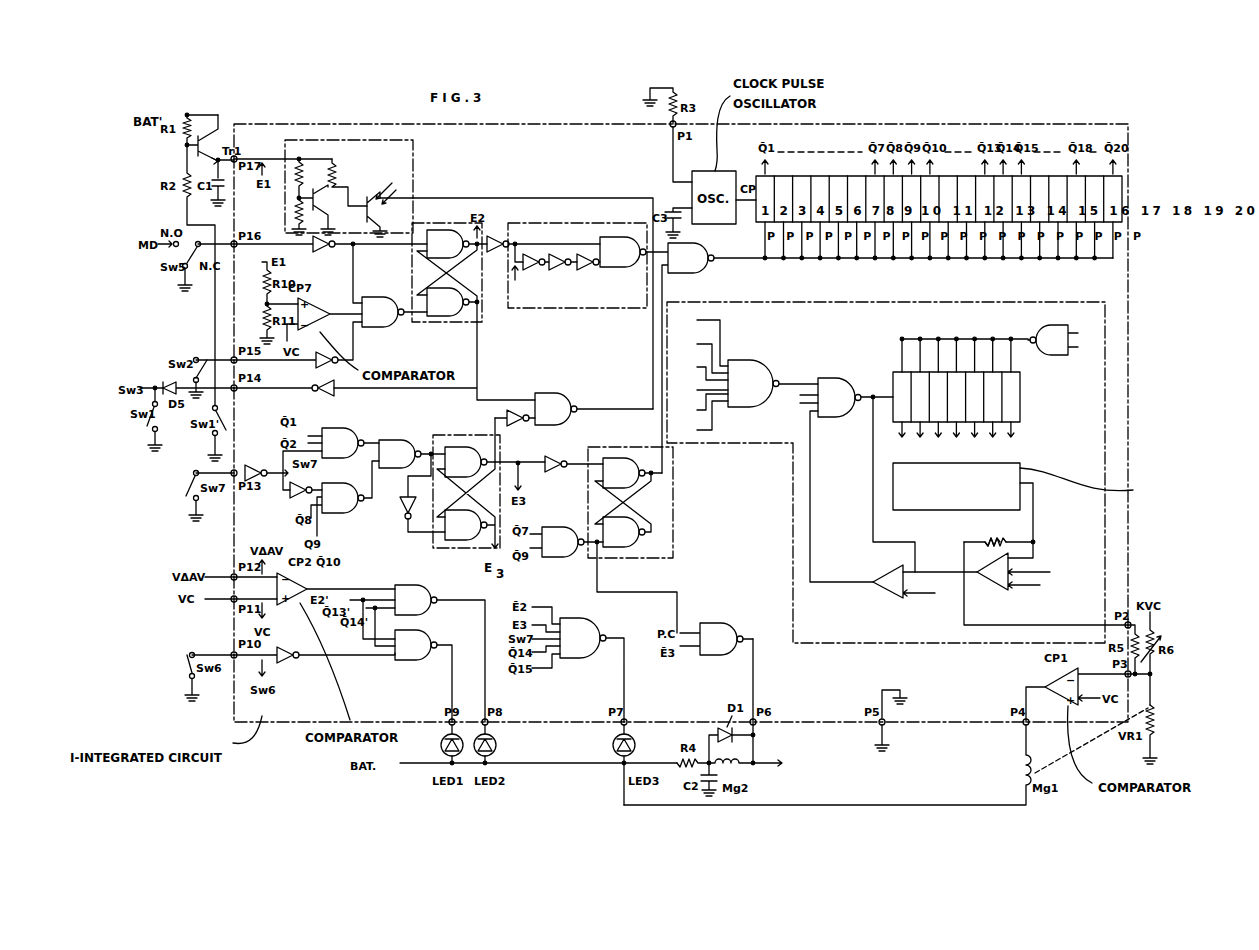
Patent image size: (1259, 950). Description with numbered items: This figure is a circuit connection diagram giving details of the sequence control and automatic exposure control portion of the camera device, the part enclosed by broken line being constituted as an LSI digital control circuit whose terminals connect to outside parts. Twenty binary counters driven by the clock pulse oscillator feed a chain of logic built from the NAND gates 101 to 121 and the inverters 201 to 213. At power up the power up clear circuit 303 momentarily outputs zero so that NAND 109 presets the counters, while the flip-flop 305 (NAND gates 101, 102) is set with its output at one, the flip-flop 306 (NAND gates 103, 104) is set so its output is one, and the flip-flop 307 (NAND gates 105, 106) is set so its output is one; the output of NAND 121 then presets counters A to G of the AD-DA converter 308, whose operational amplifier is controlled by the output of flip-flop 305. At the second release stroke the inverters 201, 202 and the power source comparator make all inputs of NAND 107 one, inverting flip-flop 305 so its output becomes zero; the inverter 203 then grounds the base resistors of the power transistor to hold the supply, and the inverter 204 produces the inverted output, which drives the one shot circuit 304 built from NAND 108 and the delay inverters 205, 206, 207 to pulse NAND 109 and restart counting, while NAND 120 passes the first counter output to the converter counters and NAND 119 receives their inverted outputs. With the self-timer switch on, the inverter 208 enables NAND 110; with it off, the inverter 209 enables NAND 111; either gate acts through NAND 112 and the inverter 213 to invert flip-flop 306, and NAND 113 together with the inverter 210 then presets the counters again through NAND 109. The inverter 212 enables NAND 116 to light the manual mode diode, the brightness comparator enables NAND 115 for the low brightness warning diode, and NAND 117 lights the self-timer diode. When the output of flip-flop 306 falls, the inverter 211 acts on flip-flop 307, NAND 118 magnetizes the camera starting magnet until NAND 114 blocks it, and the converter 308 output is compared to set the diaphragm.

The NAND gate 101 is at (448, 244).
The NAND gate 102 is at (458, 333).
The NAND gate 103 is at (466, 462).
The NAND gate 104 is at (466, 525).
The NAND gate 105 is at (624, 473).
The NAND gate 106 is at (624, 532).
The NAND gate 107 is at (394, 312).
The NAND gate 108 is at (623, 252).
The NAND gate 109 is at (879, 358).
The NAND gate 110 is at (343, 443).
The NAND gate 111 is at (345, 498).
The NAND gate 112 is at (412, 454).
The NAND gate 113 is at (594, 409).
The NAND gate 114 is at (566, 542).
The NAND gate 115 is at (440, 653).
The NAND gate 116 is at (423, 676).
The NAND gate 117 is at (578, 664).
The NAND gate 118 is at (716, 639).
The NAND gate 119 is at (753, 383).
The NAND gate 120 is at (839, 397).
The NAND gate 121 is at (1054, 340).
The inverter 201 is at (330, 255).
The inverter 202 is at (298, 345).
The inverter 203 is at (284, 397).
The inverter 204 is at (541, 256).
The inverter 205 is at (537, 276).
The inverter 206 is at (565, 277).
The inverter 207 is at (593, 274).
The inverter 208 is at (265, 464).
The inverter 209 is at (298, 498).
The inverter 210 is at (515, 427).
The inverter 211 is at (572, 456).
The inverter 212 is at (314, 667).
The inverter 213 is at (410, 493).
The power up clear circuit 303 is at (349, 188).
The one shot circuit 304 is at (577, 265).
The flip-flop circuit 305 is at (449, 285).
The flip-flop circuit 306 is at (489, 481).
The flip-flop circuit 307 is at (651, 502).
The AD-DA converter 308 is at (862, 294).